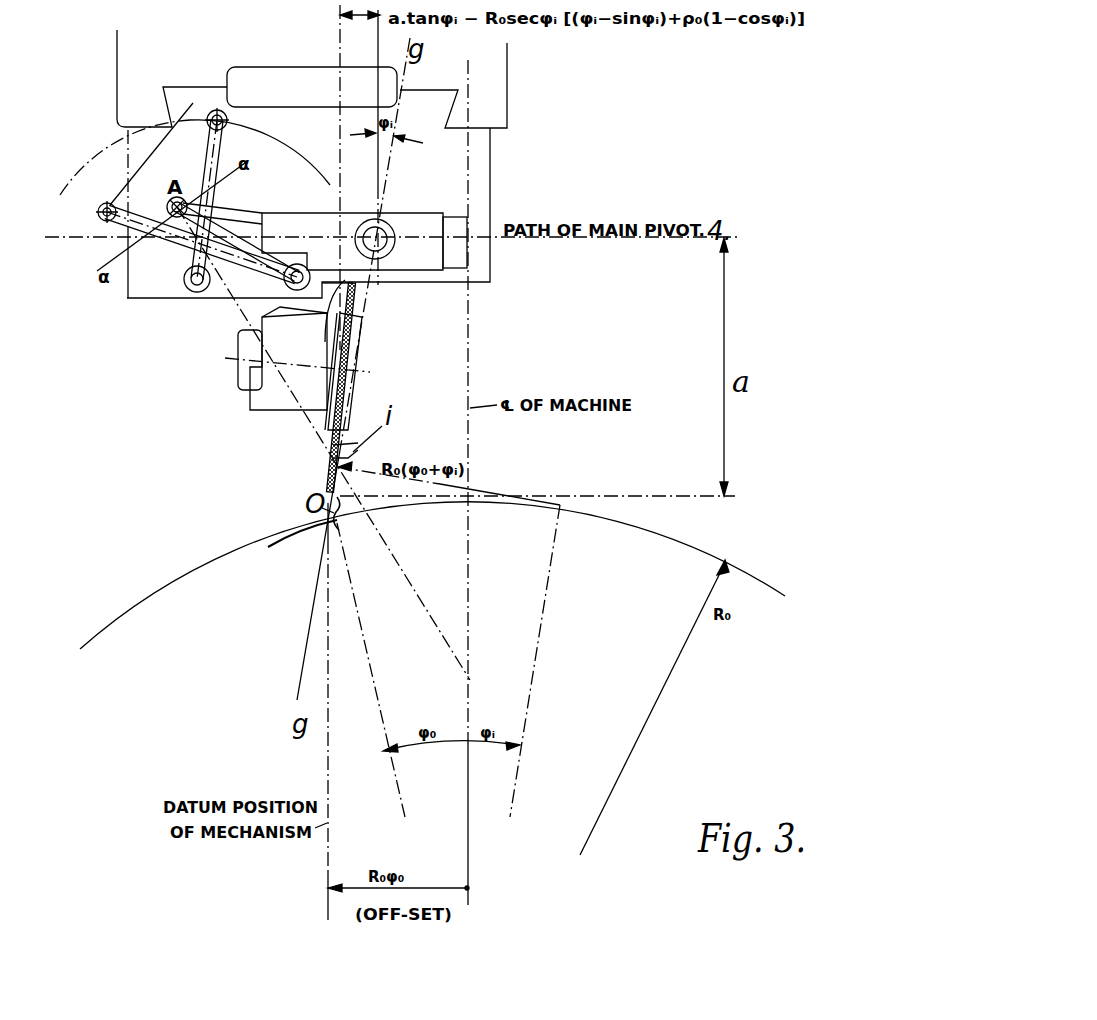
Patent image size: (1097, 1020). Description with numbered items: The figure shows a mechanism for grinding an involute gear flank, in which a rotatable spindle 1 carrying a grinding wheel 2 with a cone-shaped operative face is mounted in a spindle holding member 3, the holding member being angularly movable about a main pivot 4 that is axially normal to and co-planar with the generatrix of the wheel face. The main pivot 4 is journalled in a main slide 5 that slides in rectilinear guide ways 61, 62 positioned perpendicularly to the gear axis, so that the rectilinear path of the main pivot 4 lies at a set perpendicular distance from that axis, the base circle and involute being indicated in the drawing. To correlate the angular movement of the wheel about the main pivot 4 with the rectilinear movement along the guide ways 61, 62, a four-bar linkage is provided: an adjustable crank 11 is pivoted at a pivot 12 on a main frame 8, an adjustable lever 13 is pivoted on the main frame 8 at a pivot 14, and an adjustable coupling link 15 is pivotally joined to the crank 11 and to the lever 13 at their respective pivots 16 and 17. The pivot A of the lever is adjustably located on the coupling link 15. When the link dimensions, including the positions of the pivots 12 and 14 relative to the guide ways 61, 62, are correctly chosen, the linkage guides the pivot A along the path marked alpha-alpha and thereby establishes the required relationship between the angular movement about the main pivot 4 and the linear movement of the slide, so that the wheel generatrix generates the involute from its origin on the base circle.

The rotatable spindle 1 is at (277, 403).
The grinding wheel 2 is at (355, 305).
The spindle holding member 3 is at (280, 307).
The main pivot 4 is at (380, 233).
The main slide 5 is at (408, 223).
The main frame 8 is at (487, 257).
The adjustable crank 11 is at (222, 147).
The pivot 12 is at (189, 291).
The adjustable lever 13 is at (183, 242).
The pivot 14 is at (296, 266).
The adjustable coupling link 15 is at (173, 157).
The pivot 16 is at (215, 112).
The pivot 17 is at (103, 210).
The rectilinear guide way 61 is at (462, 212).
The rectilinear guide way 62 is at (452, 273).